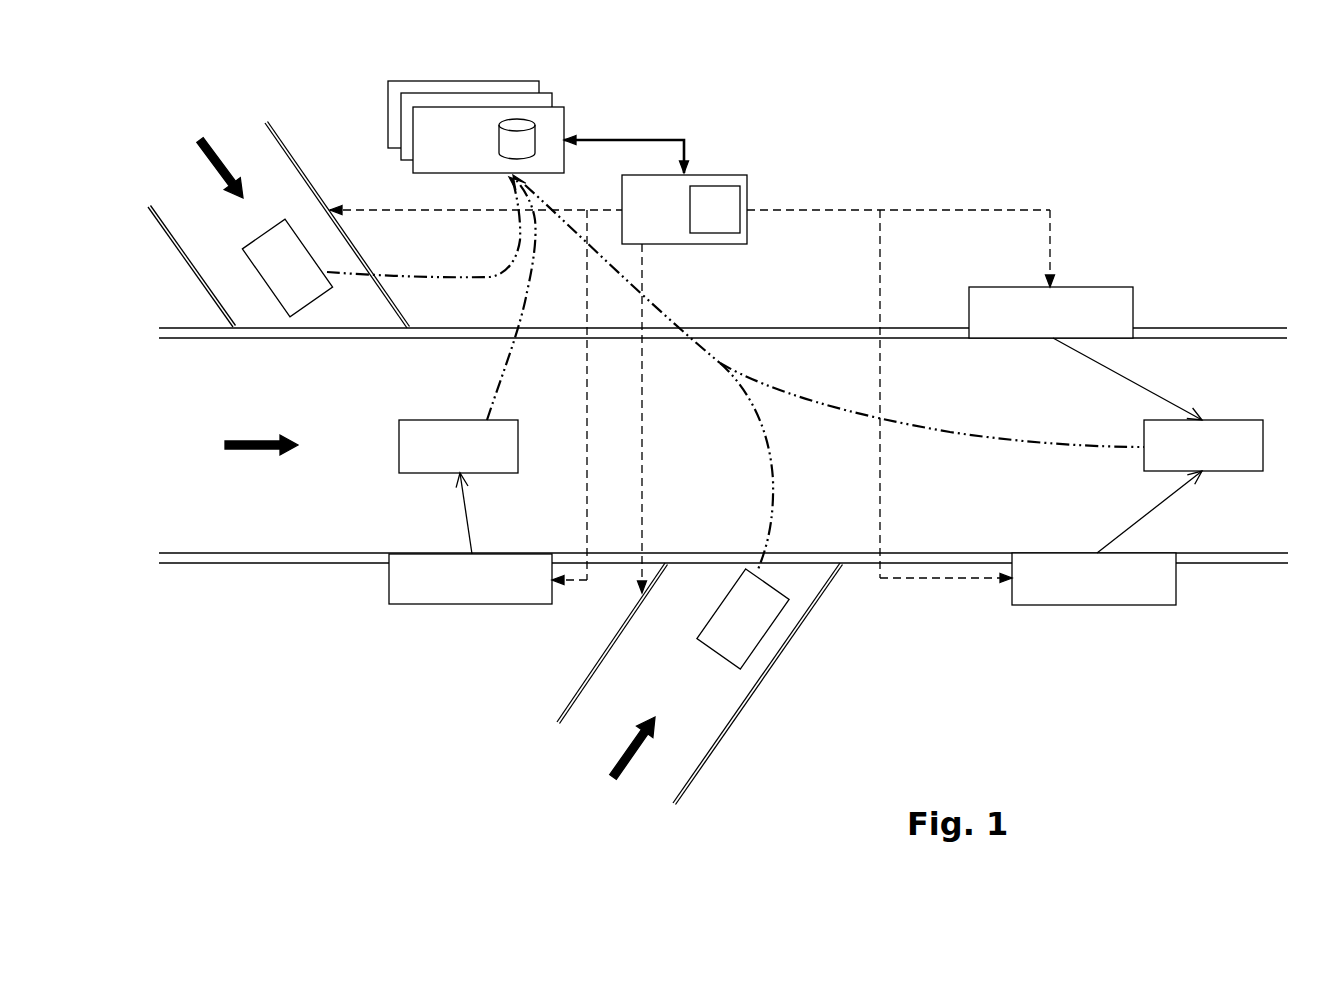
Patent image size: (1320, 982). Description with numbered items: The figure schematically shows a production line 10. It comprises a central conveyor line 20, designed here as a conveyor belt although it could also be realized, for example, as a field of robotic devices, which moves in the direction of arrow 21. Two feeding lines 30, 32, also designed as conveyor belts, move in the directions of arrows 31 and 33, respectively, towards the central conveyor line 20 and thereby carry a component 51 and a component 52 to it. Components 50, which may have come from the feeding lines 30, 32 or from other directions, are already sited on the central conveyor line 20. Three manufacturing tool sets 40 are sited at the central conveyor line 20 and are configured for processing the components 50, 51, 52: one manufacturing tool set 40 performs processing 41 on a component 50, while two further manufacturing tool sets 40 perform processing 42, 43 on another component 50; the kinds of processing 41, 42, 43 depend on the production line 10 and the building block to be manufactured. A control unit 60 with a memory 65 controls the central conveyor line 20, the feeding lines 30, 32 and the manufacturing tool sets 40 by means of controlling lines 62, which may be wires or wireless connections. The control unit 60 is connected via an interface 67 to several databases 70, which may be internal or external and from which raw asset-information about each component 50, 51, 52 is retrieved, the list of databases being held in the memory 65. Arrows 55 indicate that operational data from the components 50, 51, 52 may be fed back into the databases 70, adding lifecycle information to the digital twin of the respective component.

The production line 10 is at (1189, 180).
The central conveyor line 20 is at (213, 519).
The arrow 21 is at (262, 440).
The feeding line 30 is at (231, 248).
The arrow 31 is at (203, 150).
The feeding line 32 is at (643, 690).
The arrow 33 is at (612, 762).
The manufacturing tool set 40 is at (1068, 324).
The processing 41 is at (465, 515).
The processing 42 is at (1140, 388).
The processing 43 is at (1157, 507).
The component 50 is at (474, 462).
The component 51 is at (304, 281).
The component 52 is at (759, 632).
The arrows 55 is at (440, 283).
The control unit 60 is at (668, 227).
The controlling lines 62 is at (497, 214).
The memory 65 is at (730, 227).
The interface 67 is at (688, 148).
The databases 70 is at (461, 156).